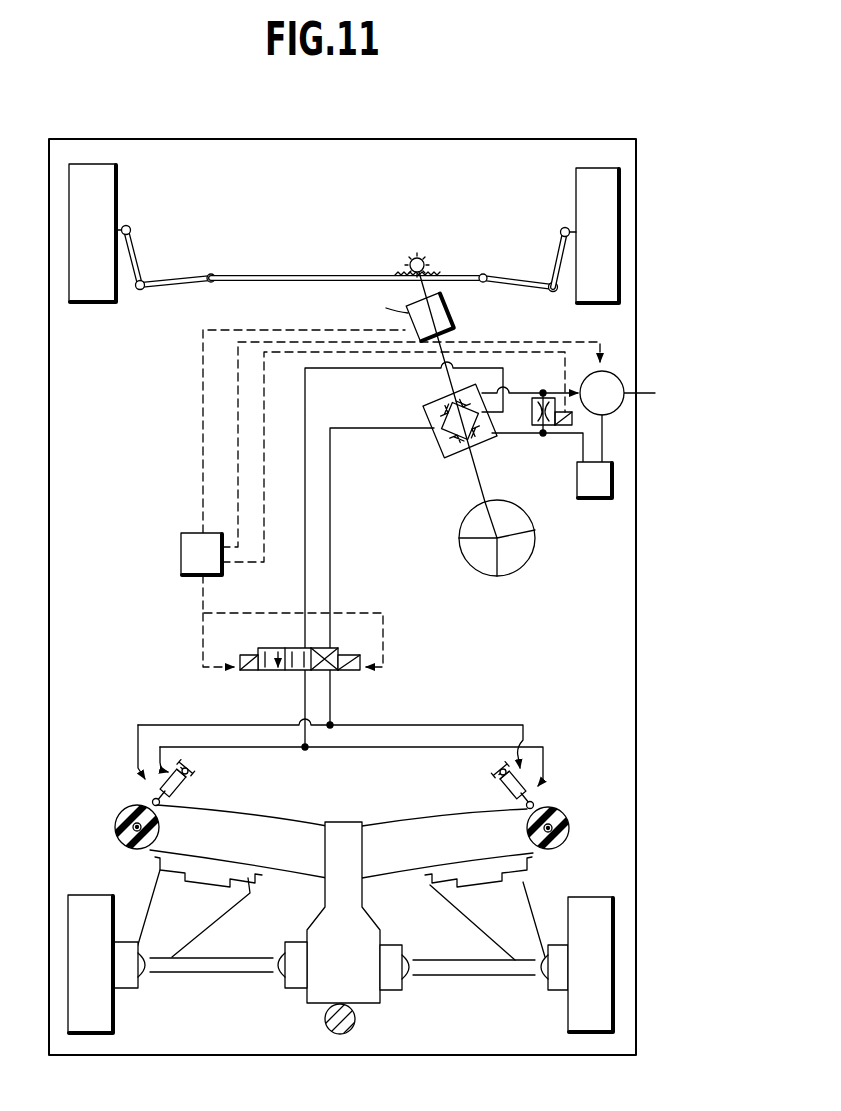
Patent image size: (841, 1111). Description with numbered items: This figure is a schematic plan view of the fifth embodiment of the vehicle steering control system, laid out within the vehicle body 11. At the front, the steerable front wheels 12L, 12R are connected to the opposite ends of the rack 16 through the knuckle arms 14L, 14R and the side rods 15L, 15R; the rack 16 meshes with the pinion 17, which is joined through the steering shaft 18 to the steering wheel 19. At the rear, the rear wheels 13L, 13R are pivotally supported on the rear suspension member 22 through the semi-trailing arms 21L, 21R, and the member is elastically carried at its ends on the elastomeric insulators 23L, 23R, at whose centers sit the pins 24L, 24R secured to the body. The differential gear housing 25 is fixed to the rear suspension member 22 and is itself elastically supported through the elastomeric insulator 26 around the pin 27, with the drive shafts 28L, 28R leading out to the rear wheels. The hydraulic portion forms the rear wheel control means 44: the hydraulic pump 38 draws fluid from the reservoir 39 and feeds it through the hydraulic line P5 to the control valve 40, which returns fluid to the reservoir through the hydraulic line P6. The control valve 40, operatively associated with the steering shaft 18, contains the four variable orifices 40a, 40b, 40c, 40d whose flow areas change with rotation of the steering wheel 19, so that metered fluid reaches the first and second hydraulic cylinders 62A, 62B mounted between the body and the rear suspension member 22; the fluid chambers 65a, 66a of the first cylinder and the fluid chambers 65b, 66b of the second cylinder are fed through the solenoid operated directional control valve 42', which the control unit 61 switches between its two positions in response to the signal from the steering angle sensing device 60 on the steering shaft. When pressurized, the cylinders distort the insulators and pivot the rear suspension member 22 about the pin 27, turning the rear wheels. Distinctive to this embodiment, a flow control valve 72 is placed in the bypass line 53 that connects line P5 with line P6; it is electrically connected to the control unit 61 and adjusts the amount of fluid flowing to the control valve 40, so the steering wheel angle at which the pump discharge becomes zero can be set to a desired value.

The vehicle body 11 is at (206, 140).
The front wheel 12L is at (98, 170).
The front wheel 12R is at (607, 170).
The rear wheel 13L is at (100, 1035).
The rear wheel 13R is at (600, 1028).
The knuckle arm 14L is at (137, 250).
The knuckle arm 14R is at (555, 253).
The side rod 15L is at (185, 275).
The side rod 15R is at (502, 277).
The rack 16 is at (273, 274).
The pinion 17 is at (415, 257).
The steering shaft 18 is at (450, 339).
The steering wheel 19 is at (535, 552).
The semi-trailing arm 21L is at (208, 910).
The semi-trailing arm 21R is at (480, 913).
The rear suspension member 22 is at (290, 833).
The elastomeric insulator 23L is at (125, 838).
The elastomeric insulator 23R is at (569, 838).
The pin 24L is at (127, 808).
The pin 24R is at (558, 813).
The differential gear housing 25 is at (364, 842).
The elastomeric insulator 26 is at (332, 1035).
The pin 27 is at (352, 1035).
The drive shaft 28L is at (230, 975).
The drive shaft 28R is at (482, 976).
The hydraulic pump 38 is at (632, 416).
The reservoir 39 is at (612, 477).
The control valve 40 is at (442, 460).
The variable orifice 40a is at (428, 405).
The variable orifice 40b is at (442, 436).
The variable orifice 40c is at (484, 380).
The variable orifice 40d is at (480, 438).
The solenoid operated directional control valve 42' is at (293, 642).
The rear wheel control means 44 is at (163, 713).
The bypass line 53 is at (548, 394).
The steering angle sensing device 60 is at (449, 315).
The control unit 61 is at (181, 560).
The first hydraulic cylinder 62A is at (142, 782).
The second hydraulic cylinder 62B is at (550, 767).
The fluid chamber 65a is at (190, 782).
The fluid chamber 65b is at (497, 788).
The fluid chamber 66a is at (170, 804).
The fluid chamber 66b is at (512, 798).
The flow control valve 72 is at (554, 440).
The hydraulic line P5 is at (568, 404).
The hydraulic line P6 is at (513, 436).